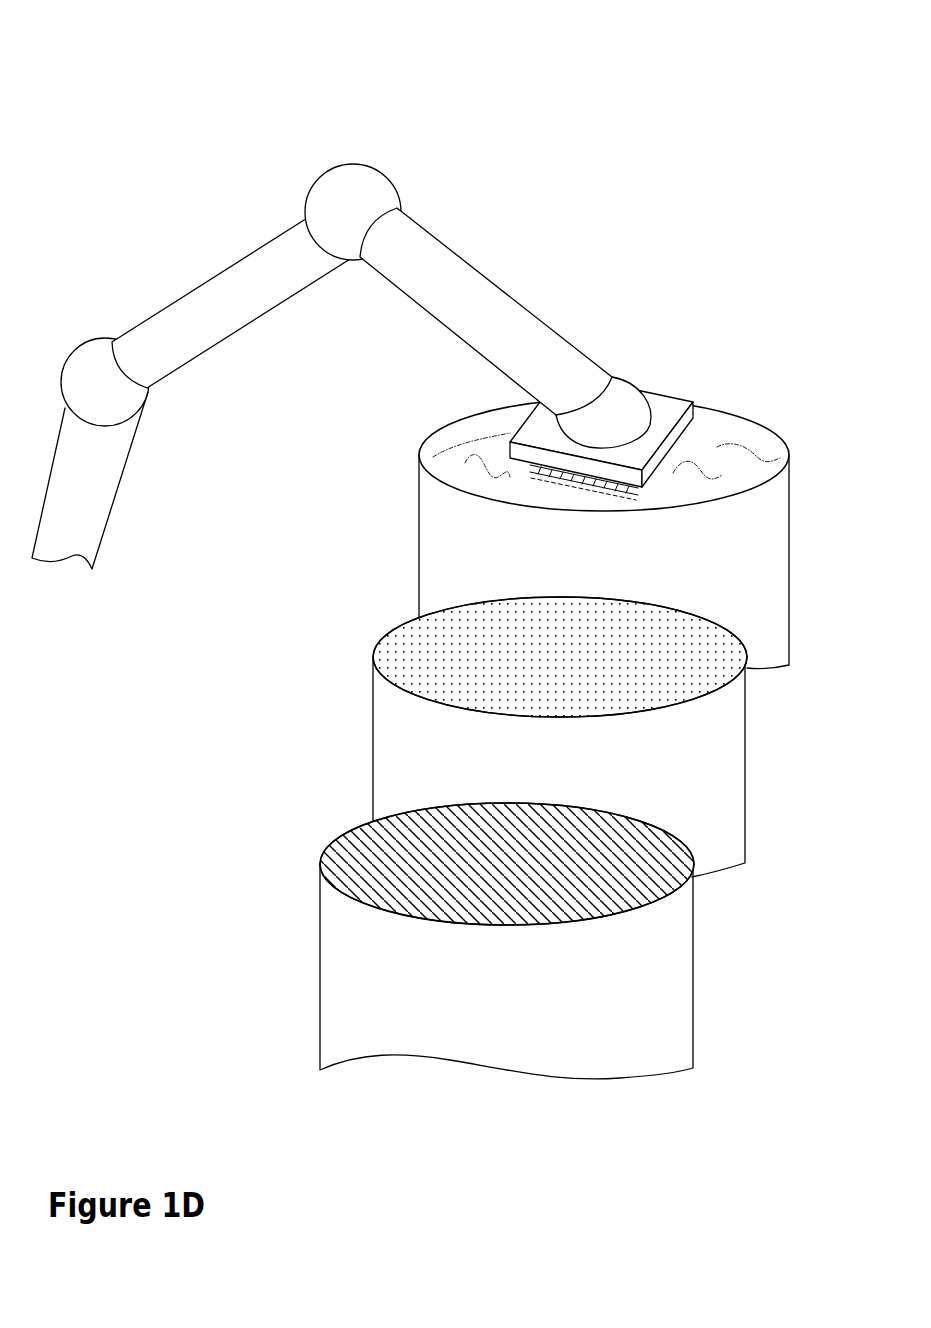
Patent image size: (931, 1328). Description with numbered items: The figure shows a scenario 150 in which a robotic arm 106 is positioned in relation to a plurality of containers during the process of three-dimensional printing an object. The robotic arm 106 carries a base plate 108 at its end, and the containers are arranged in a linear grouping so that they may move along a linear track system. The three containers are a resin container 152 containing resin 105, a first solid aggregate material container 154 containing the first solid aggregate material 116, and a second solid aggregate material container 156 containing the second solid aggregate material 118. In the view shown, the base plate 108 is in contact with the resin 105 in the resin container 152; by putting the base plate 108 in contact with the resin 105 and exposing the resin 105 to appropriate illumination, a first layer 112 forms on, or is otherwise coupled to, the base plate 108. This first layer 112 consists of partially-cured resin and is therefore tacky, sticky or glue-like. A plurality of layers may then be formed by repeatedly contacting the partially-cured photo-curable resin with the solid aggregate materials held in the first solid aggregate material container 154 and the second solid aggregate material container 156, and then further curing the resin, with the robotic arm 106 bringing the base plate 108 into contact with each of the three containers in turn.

The scenario 150 is at (462, 100).
The robotic arm 106 is at (160, 303).
The base plate 108 is at (657, 385).
The resin 105 is at (753, 448).
The first layer 112 is at (583, 485).
The resin container 152 is at (792, 582).
The first solid aggregate material 116 is at (412, 653).
The first solid aggregate material container 154 is at (747, 782).
The second solid aggregate material 118 is at (340, 848).
The second solid aggregate material container 156 is at (692, 1008).